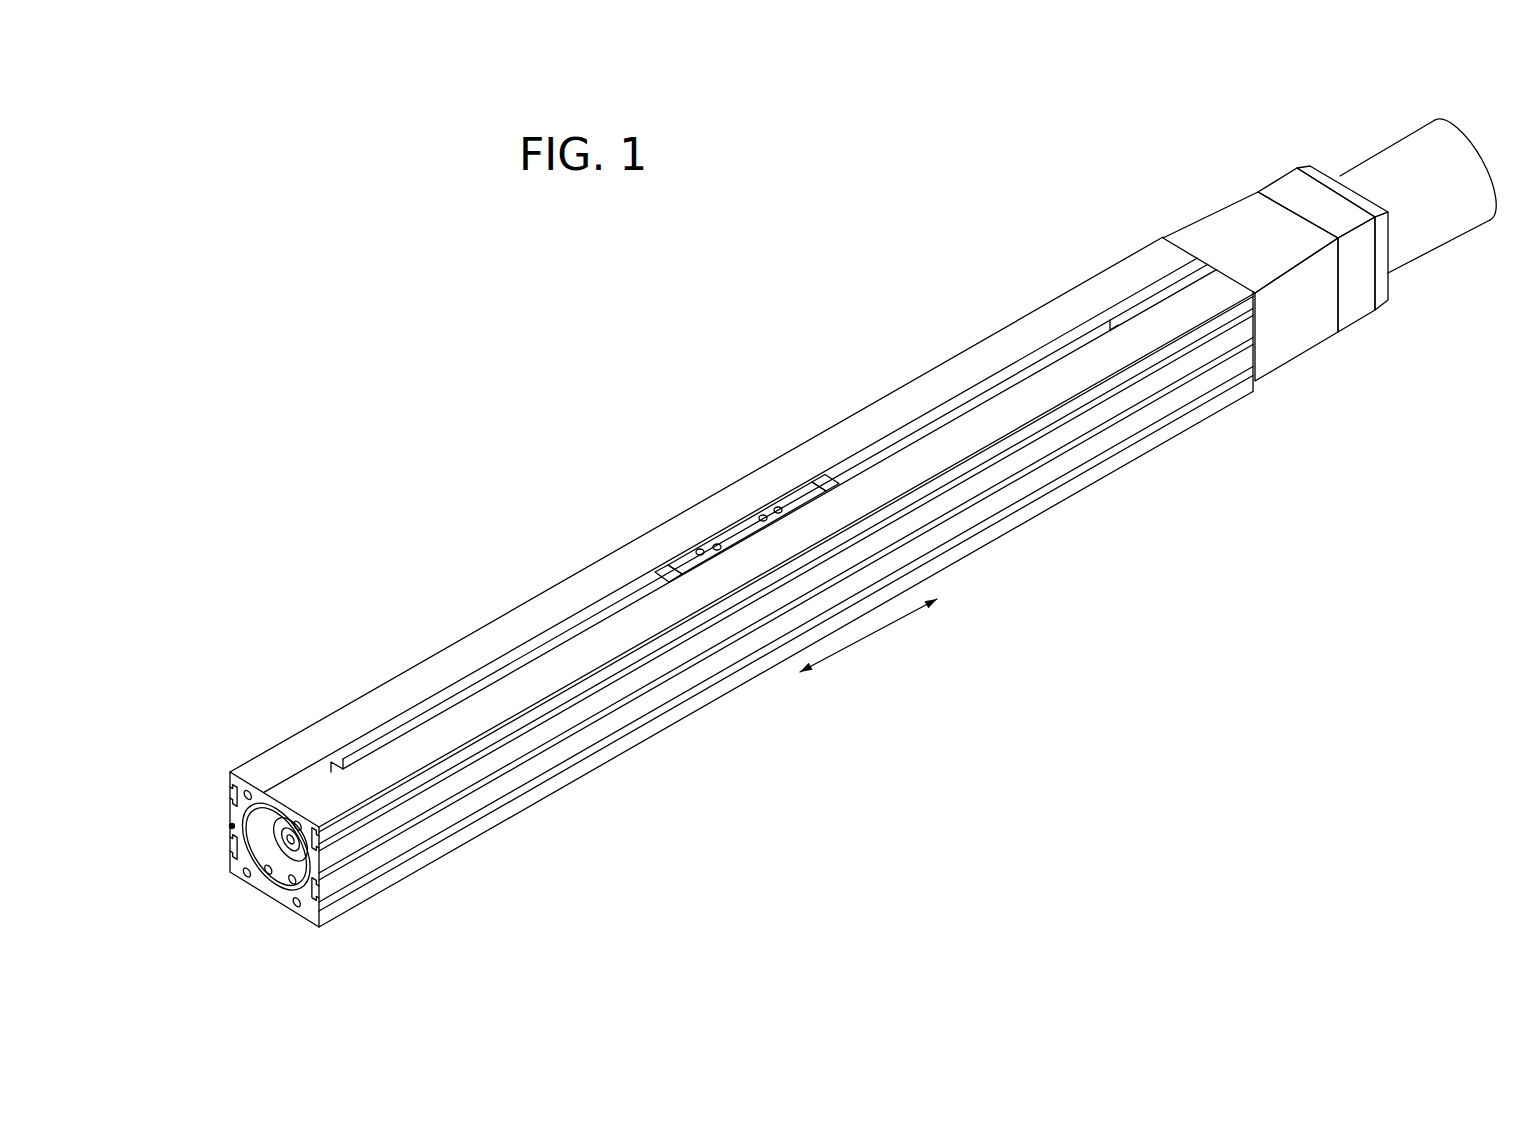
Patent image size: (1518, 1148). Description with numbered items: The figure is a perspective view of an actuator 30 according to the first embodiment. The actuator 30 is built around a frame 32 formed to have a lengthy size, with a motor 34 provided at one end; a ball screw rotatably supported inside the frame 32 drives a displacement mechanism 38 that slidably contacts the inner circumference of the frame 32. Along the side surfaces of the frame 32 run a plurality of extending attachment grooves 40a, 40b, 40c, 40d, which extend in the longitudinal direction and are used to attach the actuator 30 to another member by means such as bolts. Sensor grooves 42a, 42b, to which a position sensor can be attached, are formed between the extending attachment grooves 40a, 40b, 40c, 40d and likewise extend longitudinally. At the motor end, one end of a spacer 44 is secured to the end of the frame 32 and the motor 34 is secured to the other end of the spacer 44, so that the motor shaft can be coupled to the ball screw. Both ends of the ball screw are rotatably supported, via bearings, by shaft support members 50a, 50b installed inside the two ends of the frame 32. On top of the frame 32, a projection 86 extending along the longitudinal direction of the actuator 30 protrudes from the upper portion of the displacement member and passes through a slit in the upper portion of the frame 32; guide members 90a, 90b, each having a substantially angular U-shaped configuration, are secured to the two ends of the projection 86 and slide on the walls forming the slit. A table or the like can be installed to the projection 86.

The actuator 30 is at (1004, 222).
The frame 32 is at (487, 640).
The motor 34 is at (1423, 235).
The displacement mechanism 38 is at (743, 510).
The extending attachment groove 40a is at (488, 752).
The extending attachment groove 40b is at (447, 840).
The extending attachment groove 40c is at (228, 789).
The extending attachment groove 40d is at (228, 847).
The sensor groove 42a is at (470, 800).
The sensor groove 42b is at (232, 826).
The spacer 44 is at (1228, 225).
The shaft support member 50a is at (1170, 290).
The shaft support member 50b is at (320, 778).
The projection 86 is at (733, 527).
The guide member 90a is at (817, 490).
The guide member 90b is at (665, 572).